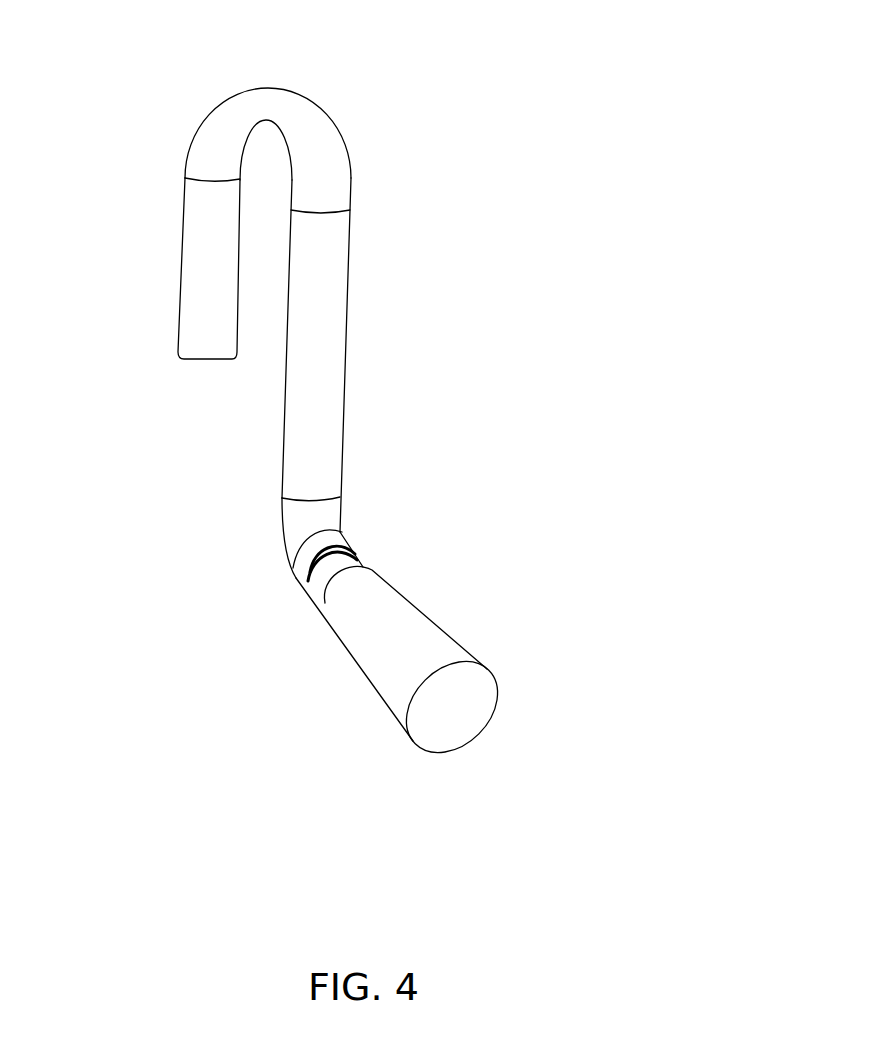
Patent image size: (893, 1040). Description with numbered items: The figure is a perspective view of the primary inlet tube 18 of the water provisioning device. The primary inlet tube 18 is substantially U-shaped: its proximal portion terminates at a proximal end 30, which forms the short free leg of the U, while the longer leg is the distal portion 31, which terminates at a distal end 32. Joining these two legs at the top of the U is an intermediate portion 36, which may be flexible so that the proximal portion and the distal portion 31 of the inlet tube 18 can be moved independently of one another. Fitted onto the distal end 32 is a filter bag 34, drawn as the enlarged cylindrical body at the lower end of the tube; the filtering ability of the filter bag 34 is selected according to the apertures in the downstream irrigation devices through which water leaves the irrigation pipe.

The primary inlet tube 18 is at (603, 300).
The proximal end 30 is at (185, 363).
The distal portion 31 is at (322, 290).
The distal end 32 is at (318, 523).
The filter bag 34 is at (400, 672).
The intermediate portion 36 is at (320, 110).